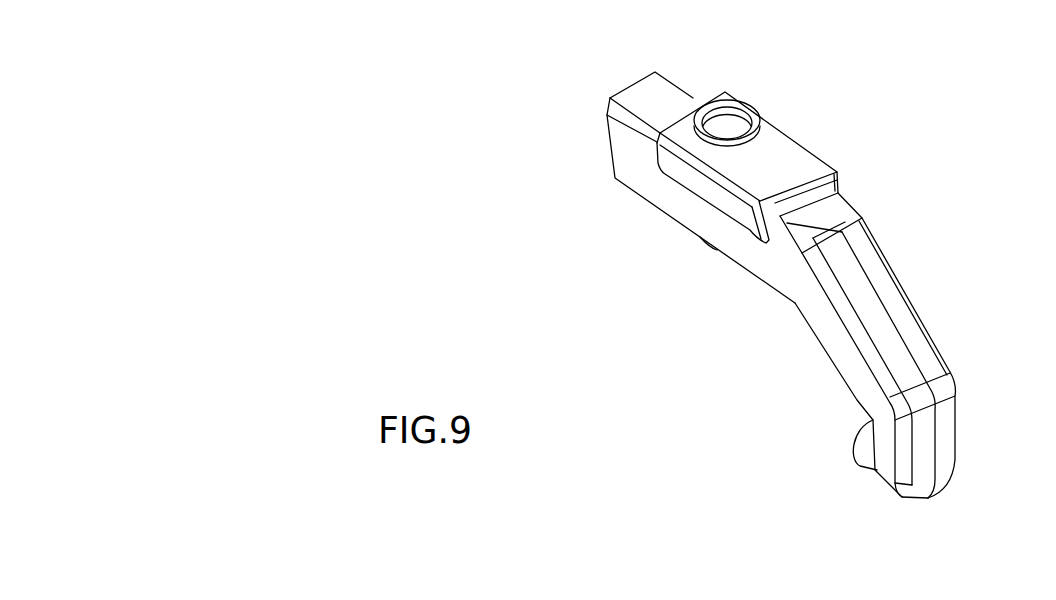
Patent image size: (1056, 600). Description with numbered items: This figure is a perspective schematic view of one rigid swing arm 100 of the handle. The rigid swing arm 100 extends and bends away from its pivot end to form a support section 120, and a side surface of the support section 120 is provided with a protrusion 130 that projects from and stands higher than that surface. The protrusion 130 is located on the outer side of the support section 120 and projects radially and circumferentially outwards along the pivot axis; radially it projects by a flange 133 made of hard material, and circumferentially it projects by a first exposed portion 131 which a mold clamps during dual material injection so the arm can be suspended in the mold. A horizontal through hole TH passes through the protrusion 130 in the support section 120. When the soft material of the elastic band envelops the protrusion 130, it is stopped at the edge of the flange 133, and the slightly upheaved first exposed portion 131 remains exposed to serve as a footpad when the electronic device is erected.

The rigid swing arm 100 is at (903, 278).
The support section 120 is at (633, 178).
The protrusion 130 is at (788, 137).
The first exposed portion 131 is at (713, 190).
The flange 133 is at (700, 113).
The through hole TH is at (733, 123).